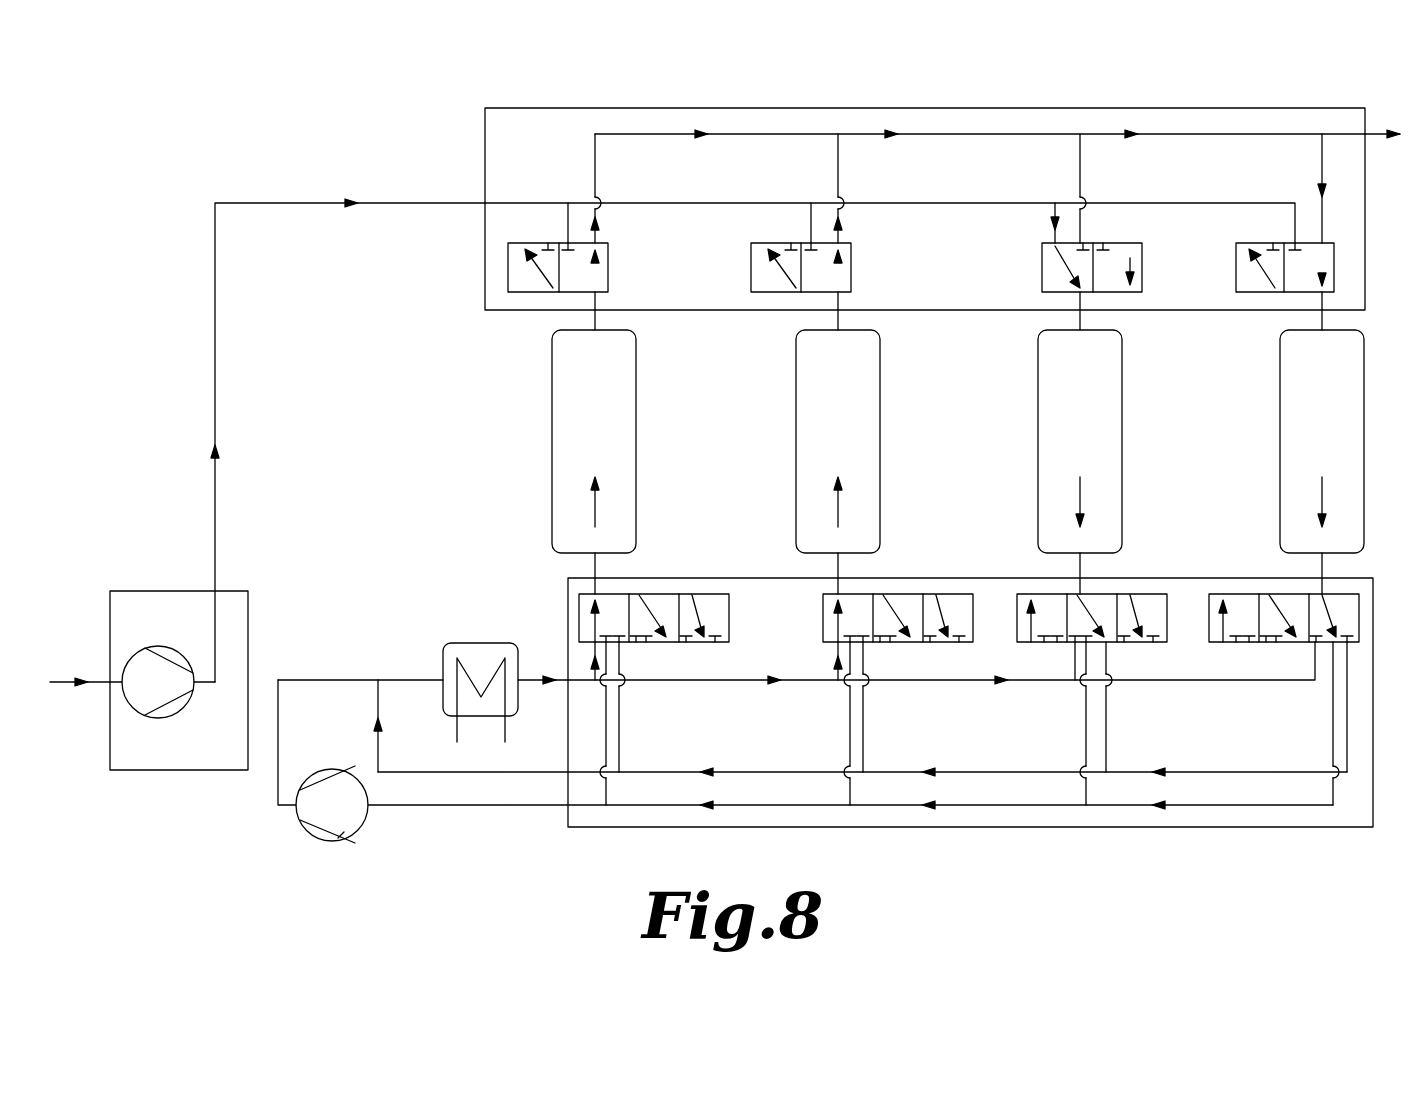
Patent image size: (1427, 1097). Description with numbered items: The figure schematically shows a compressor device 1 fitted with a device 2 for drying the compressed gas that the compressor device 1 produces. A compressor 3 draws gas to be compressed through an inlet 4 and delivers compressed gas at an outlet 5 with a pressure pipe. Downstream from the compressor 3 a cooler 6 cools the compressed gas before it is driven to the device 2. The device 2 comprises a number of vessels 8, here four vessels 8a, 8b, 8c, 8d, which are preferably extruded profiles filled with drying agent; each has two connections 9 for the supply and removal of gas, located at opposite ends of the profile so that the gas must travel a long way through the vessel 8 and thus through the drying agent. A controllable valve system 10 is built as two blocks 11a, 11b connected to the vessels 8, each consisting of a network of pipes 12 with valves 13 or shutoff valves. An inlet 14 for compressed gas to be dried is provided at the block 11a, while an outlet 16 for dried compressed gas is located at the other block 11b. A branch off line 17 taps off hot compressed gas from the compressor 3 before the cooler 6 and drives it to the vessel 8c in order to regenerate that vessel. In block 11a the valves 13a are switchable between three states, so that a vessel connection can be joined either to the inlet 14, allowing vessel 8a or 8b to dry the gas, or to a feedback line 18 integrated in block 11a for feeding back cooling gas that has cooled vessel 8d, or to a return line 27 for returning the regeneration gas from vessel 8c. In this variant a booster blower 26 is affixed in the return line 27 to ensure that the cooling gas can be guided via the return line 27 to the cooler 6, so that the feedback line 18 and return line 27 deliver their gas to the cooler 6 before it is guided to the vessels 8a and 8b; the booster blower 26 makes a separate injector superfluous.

The compressor device 1 is at (116, 152).
The device for drying compressed gas 2 is at (1382, 841).
The compressor 3 is at (158, 645).
The inlet 4 is at (65, 680).
The outlet 5 is at (205, 680).
The cooler 6 is at (460, 650).
The vessels 8 is at (480, 455).
The vessel 8a is at (568, 400).
The vessel 8b is at (810, 402).
The vessel 8c is at (1050, 410).
The vessel 8d is at (1290, 400).
The connections 9 is at (595, 322).
The controllable valve system 10 is at (1368, 312).
The block 11a is at (565, 828).
The block 11b is at (485, 125).
The pipes 12 is at (952, 203).
The valves 13 is at (775, 243).
The valves 13a is at (652, 594).
The inlet 14 is at (568, 680).
The outlet 16 is at (1365, 134).
The branch off line 17 is at (215, 343).
The feedback line 18 is at (890, 772).
The booster blower 26 is at (322, 838).
The return line 27 is at (987, 805).